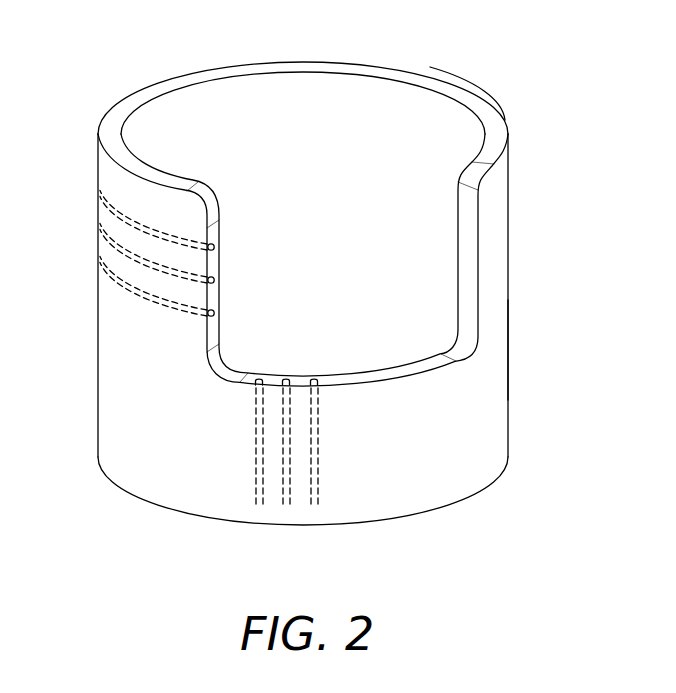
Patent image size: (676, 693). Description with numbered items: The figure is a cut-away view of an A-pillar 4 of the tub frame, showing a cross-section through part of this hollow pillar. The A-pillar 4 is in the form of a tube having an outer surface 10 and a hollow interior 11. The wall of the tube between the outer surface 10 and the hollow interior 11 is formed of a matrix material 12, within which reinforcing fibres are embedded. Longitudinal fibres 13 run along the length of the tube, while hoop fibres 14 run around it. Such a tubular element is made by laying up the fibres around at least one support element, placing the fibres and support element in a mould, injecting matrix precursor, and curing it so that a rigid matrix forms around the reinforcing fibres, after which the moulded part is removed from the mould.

The A-pillar 4 is at (524, 206).
The outer surface 10 is at (500, 396).
The hollow interior 11 is at (297, 104).
The matrix material 12 is at (463, 97).
The longitudinal fibres 13 is at (259, 507).
The hoop fibres 14 is at (99, 258).